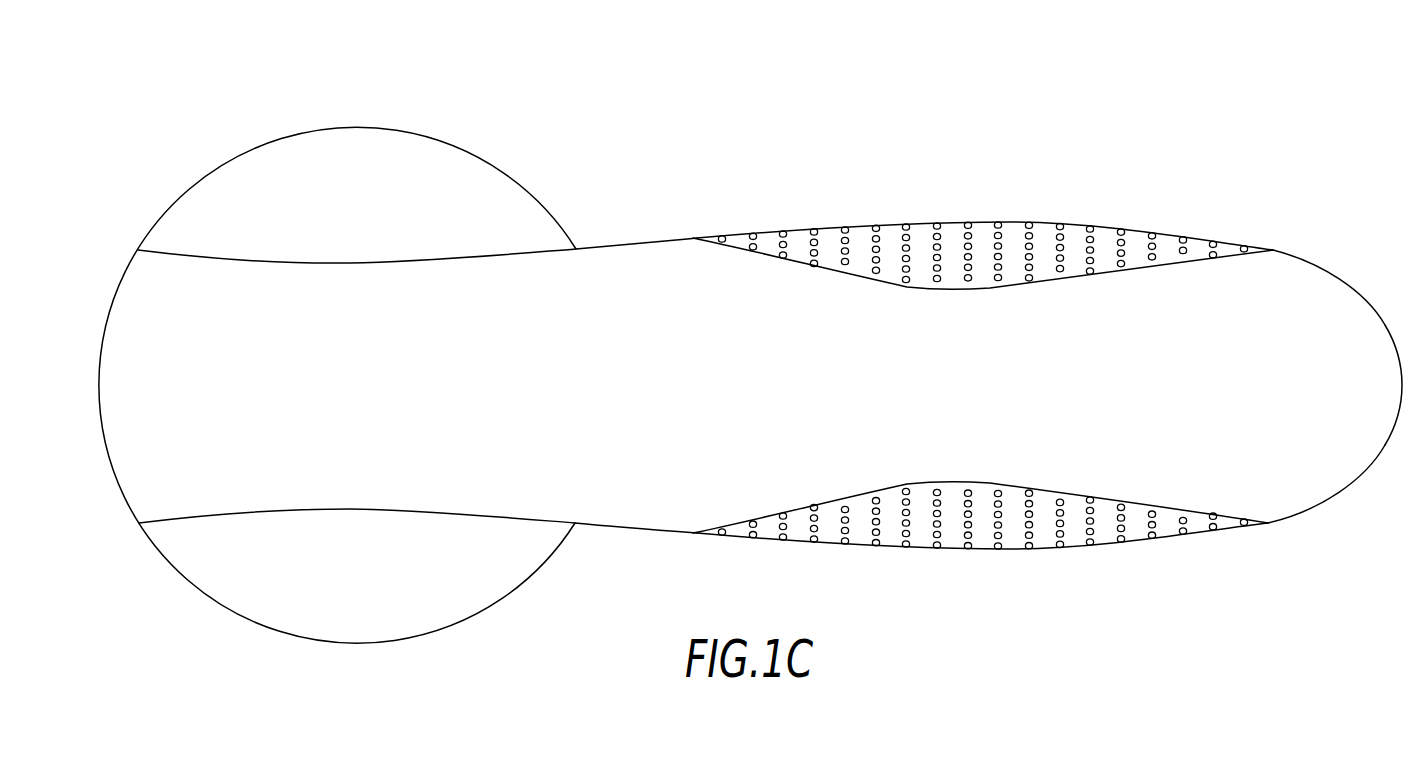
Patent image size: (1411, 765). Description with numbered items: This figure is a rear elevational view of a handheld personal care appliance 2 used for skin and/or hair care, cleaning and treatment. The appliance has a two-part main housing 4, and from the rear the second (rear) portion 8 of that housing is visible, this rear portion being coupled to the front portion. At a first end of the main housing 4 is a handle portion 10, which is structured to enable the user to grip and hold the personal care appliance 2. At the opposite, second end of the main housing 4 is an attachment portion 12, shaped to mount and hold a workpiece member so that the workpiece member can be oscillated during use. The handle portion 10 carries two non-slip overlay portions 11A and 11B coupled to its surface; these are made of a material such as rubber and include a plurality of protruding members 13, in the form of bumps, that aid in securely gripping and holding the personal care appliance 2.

The personal care appliance 2 is at (750, 353).
The main housing 4 is at (613, 264).
The second (rear) portion 8 is at (1335, 372).
The handle portion 10 is at (1385, 323).
The non-slip overlay portion 11A is at (1012, 232).
The non-slip overlay portion 11B is at (1133, 535).
The attachment portion 12 is at (392, 129).
The protruding members 13 is at (910, 250).